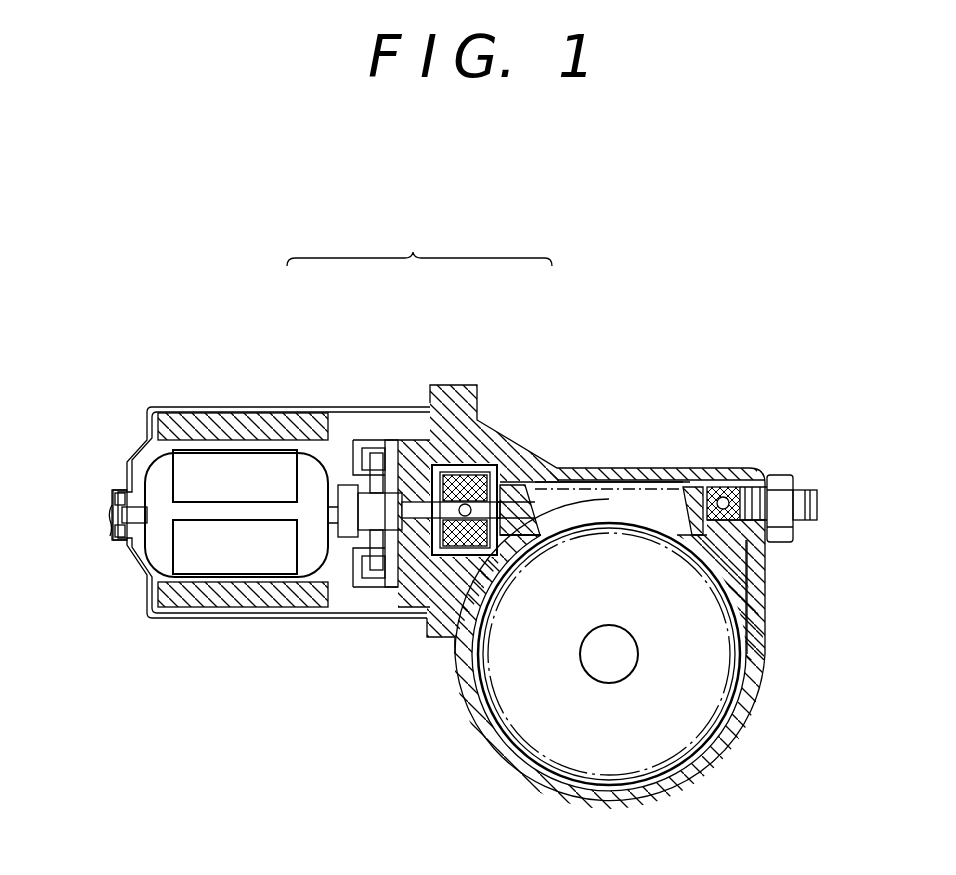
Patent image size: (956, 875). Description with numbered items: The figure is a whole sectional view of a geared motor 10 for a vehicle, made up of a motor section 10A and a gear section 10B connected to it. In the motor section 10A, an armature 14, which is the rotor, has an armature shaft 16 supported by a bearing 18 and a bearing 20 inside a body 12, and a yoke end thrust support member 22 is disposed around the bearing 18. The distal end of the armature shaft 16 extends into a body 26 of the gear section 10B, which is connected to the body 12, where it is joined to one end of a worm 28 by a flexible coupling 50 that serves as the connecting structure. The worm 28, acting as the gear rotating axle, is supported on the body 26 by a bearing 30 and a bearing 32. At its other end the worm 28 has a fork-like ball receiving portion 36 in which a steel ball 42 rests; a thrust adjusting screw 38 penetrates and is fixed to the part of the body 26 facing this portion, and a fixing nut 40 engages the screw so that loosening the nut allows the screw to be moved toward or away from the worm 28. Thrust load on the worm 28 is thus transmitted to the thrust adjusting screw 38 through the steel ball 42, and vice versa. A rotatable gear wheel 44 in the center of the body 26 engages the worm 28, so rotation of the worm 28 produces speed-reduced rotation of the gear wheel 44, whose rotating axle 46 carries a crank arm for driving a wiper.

The geared motor 10 is at (419, 241).
The motor section 10A is at (307, 396).
The gear section 10B is at (577, 396).
The body 12 is at (234, 620).
The armature 14 is at (247, 465).
The armature shaft 16 is at (373, 440).
The bearing 18 is at (118, 491).
The bearing 20 is at (400, 485).
The yoke end thrust support member 22 is at (118, 541).
The body 26 is at (767, 627).
The worm 28 is at (623, 503).
The bearing 30 is at (548, 470).
The bearing 32 is at (717, 473).
The ball receiving portion 36 is at (762, 567).
The thrust adjusting screw 38 is at (808, 483).
The fixing nut 40 is at (795, 535).
The steel ball 42 is at (742, 477).
The gear wheel 44 is at (673, 747).
The rotating axle 46 is at (603, 665).
The flexible coupling 50 is at (490, 462).